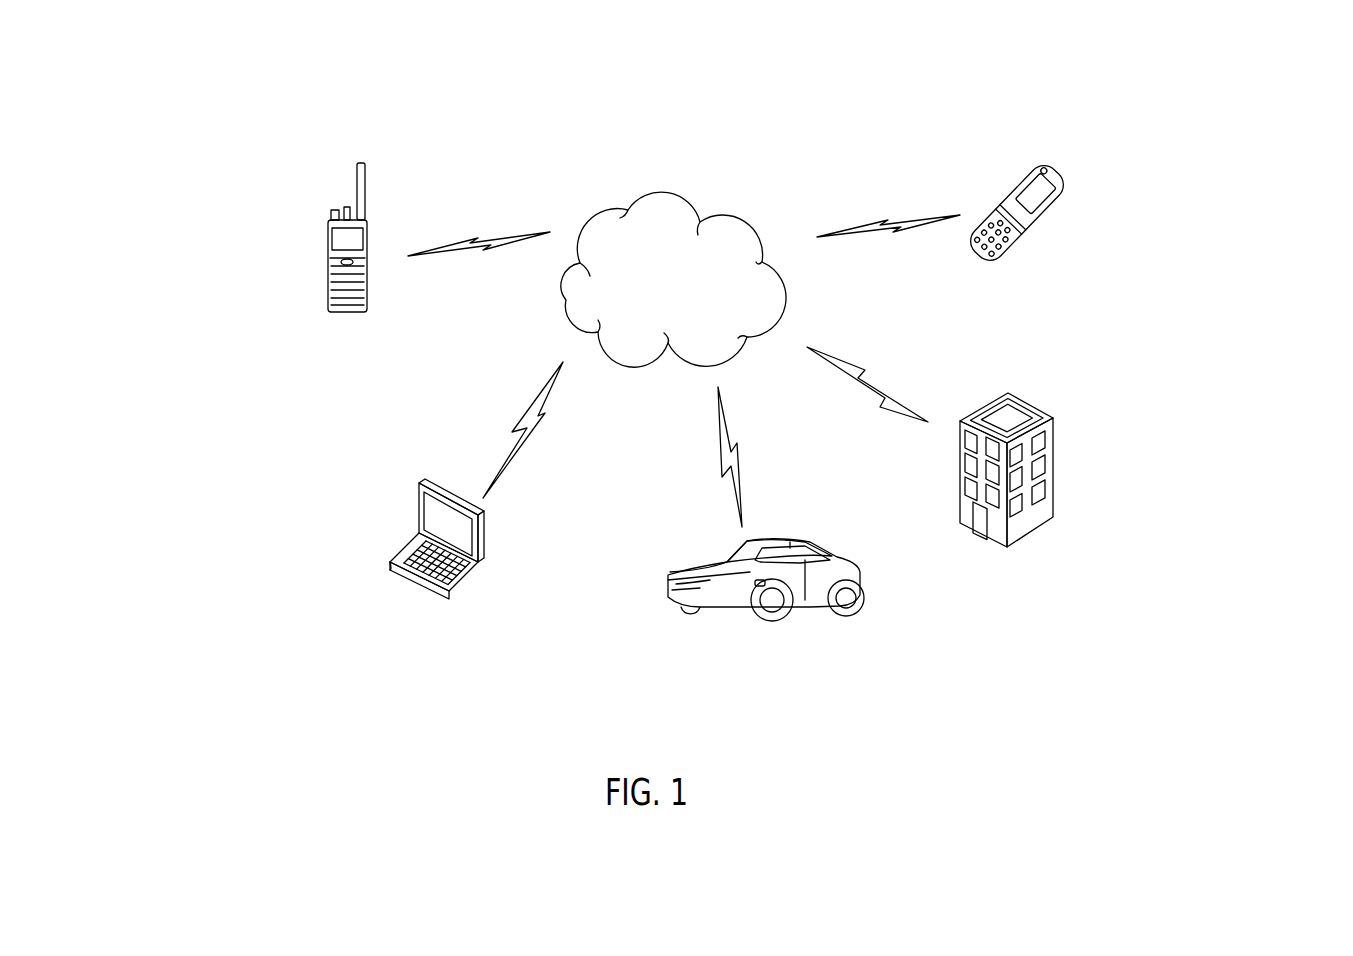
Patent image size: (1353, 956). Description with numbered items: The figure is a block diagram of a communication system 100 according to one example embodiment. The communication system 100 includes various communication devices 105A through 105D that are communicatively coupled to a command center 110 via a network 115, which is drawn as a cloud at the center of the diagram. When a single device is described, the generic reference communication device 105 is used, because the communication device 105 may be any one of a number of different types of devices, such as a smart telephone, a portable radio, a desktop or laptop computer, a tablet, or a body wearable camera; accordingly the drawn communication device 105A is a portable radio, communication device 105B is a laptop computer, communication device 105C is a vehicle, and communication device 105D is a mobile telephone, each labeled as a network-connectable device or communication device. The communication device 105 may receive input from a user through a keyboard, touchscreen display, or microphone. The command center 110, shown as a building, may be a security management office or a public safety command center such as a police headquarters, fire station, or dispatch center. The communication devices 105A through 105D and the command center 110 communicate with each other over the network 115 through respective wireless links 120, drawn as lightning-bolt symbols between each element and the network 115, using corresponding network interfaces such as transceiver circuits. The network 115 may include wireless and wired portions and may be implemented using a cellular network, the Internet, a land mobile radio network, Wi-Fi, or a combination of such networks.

The communication system 100 is at (258, 110).
The communication device 105 is at (386, 335).
The communication device 105A is at (330, 300).
The communication device 105B is at (389, 564).
The communication device 105C is at (792, 612).
The communication device 105D is at (1045, 220).
The command center 110 is at (1055, 472).
The network 115 is at (566, 306).
The wireless link 120 is at (506, 232).